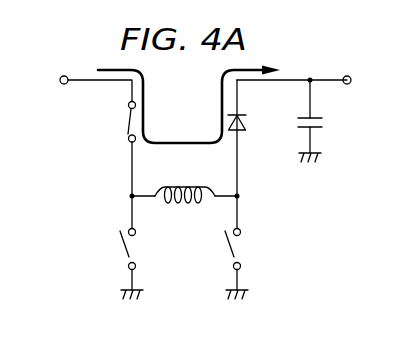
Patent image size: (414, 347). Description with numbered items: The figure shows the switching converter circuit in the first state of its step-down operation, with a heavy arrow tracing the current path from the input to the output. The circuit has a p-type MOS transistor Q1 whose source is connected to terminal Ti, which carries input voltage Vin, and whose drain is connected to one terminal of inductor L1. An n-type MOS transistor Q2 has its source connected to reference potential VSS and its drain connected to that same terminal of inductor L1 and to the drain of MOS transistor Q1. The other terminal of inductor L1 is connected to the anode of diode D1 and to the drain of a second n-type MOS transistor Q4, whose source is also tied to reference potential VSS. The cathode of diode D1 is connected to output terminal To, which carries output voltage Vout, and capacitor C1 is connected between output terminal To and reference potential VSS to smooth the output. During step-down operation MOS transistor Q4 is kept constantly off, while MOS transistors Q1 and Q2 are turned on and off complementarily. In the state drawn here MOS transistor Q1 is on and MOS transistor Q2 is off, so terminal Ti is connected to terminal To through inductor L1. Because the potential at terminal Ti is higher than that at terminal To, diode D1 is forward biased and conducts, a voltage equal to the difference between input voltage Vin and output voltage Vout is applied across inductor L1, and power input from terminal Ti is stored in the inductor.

The p-type MOS transistor Q1 is at (116, 122).
The n-type MOS transistor Q2 is at (140, 260).
The n-type MOS transistor Q4 is at (245, 260).
The diode D1 is at (251, 123).
The inductor L1 is at (185, 182).
The capacitor C1 is at (323, 125).
The terminal Ti is at (62, 75).
The output terminal To is at (350, 75).
The input voltage Vin is at (38, 81).
The output voltage Vout is at (376, 81).
The reference potential VSS is at (220, 240).